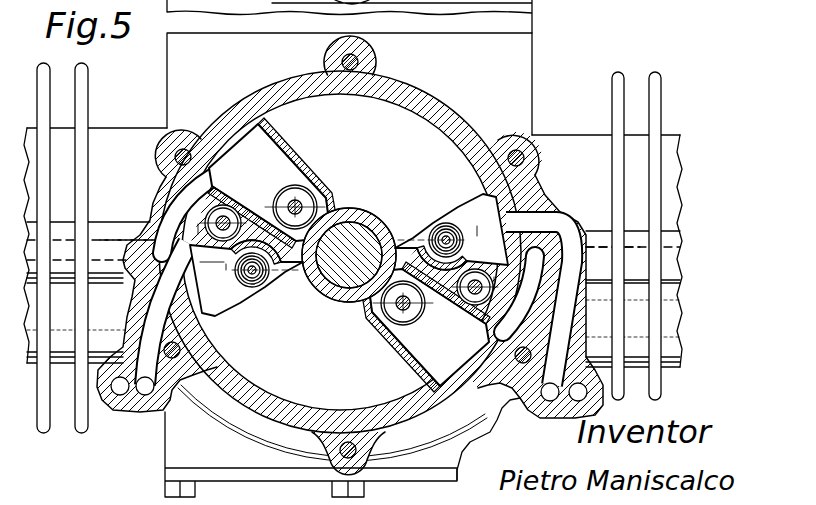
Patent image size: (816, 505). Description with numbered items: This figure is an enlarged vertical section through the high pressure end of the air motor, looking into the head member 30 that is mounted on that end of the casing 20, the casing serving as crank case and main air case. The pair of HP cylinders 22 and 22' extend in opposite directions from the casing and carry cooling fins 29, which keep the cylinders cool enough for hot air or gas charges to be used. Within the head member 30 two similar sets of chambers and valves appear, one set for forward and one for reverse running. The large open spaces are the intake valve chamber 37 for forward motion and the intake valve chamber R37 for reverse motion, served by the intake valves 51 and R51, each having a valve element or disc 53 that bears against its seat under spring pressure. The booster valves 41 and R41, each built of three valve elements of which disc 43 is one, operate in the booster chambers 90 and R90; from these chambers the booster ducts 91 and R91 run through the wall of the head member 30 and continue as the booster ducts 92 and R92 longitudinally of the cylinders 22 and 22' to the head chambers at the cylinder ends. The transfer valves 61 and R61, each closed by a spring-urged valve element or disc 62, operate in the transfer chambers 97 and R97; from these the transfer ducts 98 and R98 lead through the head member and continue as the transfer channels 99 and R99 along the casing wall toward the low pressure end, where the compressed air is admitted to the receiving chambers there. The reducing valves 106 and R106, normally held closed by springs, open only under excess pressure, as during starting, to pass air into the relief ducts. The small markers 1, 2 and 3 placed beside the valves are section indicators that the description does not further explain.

The casing 20 is at (537, 80).
The HP cylinder 22 is at (95, 231).
The HP cylinder 22' is at (607, 234).
The cooling fins 29 is at (80, 88).
The head member 30 is at (458, 110).
The intake valve chamber 37 is at (298, 298).
The intake valve chamber R37 is at (399, 208).
The booster valve 41 is at (294, 205).
The valve element 43 is at (283, 223).
The intake valve 51 is at (241, 228).
The valve element 53 is at (223, 219).
The transfer valve 61 is at (244, 269).
The valve element 62 is at (246, 280).
The booster chamber 90 is at (272, 183).
The booster chamber R90 is at (426, 327).
The booster duct 91 is at (187, 215).
The booster duct R91 is at (514, 301).
The booster duct 92 is at (107, 240).
The booster duct R92 is at (593, 246).
The transfer chamber 97 is at (246, 278).
The transfer chamber R97 is at (451, 232).
The transfer duct 98 is at (166, 314).
The transfer duct R98 is at (517, 241).
The transfer channel 99 is at (145, 396).
The transfer channel R99 is at (540, 399).
The reducing valve 106 is at (119, 396).
The reducing valve R106 is at (587, 396).
The booster valve R41 is at (410, 312).
The intake valve R51 is at (468, 286).
The transfer valve R61 is at (452, 233).
The section line 1 is at (360, 279).
The section line 2 is at (344, 270).
The section line 3 is at (339, 224).